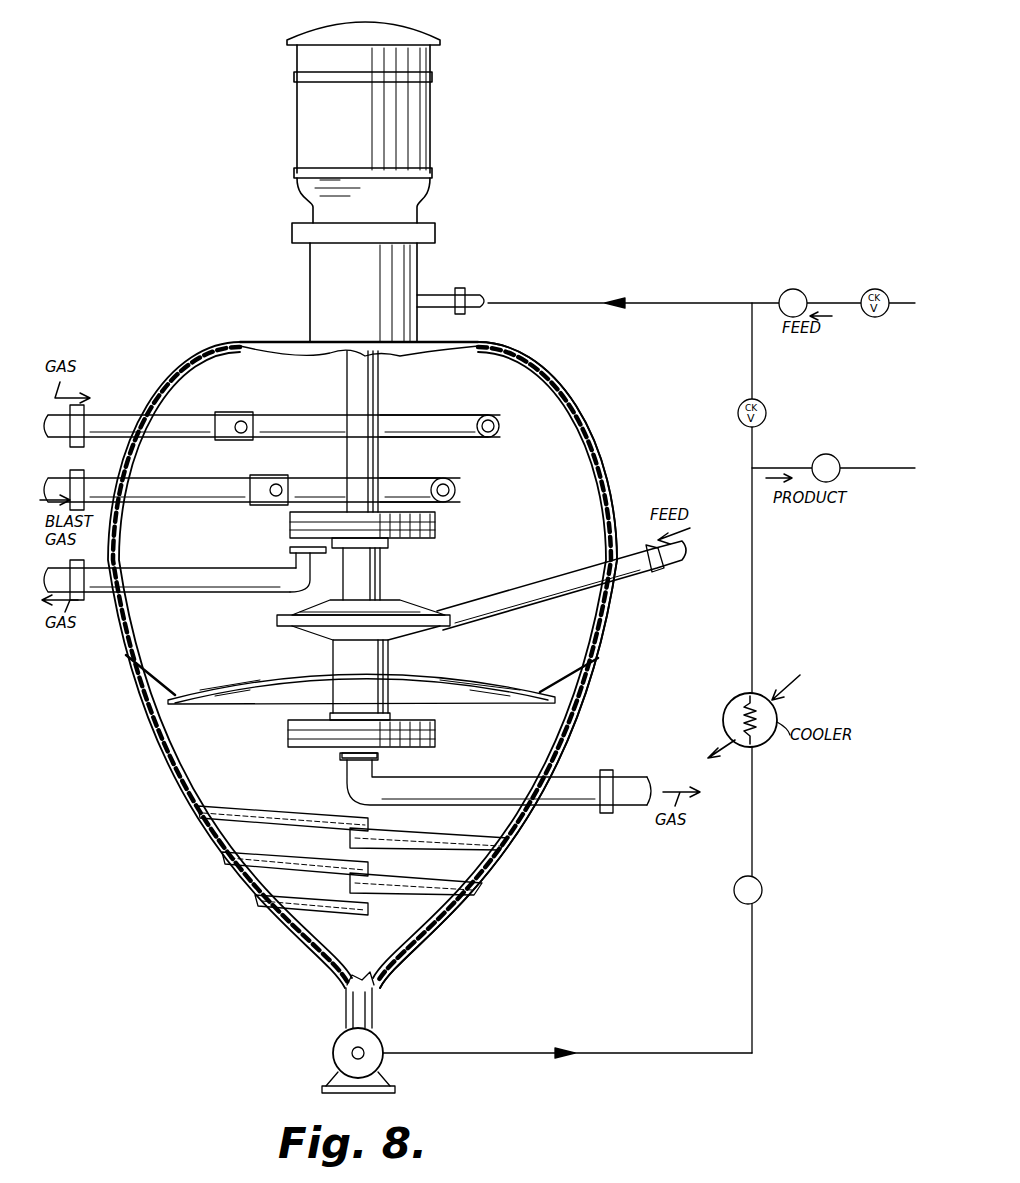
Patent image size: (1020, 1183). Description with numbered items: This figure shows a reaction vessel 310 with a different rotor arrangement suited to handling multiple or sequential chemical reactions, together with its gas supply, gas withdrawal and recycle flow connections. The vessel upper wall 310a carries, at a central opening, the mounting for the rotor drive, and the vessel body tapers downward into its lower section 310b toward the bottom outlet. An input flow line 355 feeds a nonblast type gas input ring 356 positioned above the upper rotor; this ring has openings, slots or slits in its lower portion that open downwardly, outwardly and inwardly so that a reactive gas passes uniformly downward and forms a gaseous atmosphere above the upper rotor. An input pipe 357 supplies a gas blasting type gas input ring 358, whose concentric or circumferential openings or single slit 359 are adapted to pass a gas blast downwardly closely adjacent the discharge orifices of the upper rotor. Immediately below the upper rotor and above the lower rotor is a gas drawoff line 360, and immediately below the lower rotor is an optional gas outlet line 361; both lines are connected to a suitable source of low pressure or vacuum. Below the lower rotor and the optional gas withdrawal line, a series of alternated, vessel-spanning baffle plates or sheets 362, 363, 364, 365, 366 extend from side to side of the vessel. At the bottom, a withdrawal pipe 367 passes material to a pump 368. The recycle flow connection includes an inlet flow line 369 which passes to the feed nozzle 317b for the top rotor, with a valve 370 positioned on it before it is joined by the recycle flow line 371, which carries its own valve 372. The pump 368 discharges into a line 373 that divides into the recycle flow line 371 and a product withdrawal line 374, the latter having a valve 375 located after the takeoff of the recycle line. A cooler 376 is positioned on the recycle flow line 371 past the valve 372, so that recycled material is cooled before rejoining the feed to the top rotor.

The reaction vessel 310 is at (612, 620).
The vessel upper wall 310a is at (548, 372).
The lower conical vessel section 310b is at (444, 912).
The feed nozzle 317b is at (455, 292).
The input flow line 355 is at (150, 424).
The nonblast type gas input ring 356 is at (300, 415).
The input pipe 357 is at (178, 480).
The gas blasting type gas input ring 358 is at (318, 484).
The slit 359 is at (290, 524).
The gas drawoff line 360 is at (194, 572).
The gas outlet line 361 is at (500, 780).
The baffle plate 362 is at (300, 812).
The baffle plate 363 is at (430, 832).
The baffle plate 364 is at (300, 858).
The baffle plate 365 is at (435, 876).
The baffle plate 366 is at (330, 900).
The withdrawal pipe 367 is at (345, 1010).
The pump 368 is at (333, 1058).
The inlet flow line 369 is at (682, 300).
The valve 370 is at (802, 290).
The recycle flow line 371 is at (753, 598).
The valve 372 is at (763, 890).
The line 373 is at (518, 1052).
The product withdrawal line 374 is at (782, 468).
The valve 375 is at (838, 460).
The cooler 376 is at (795, 678).